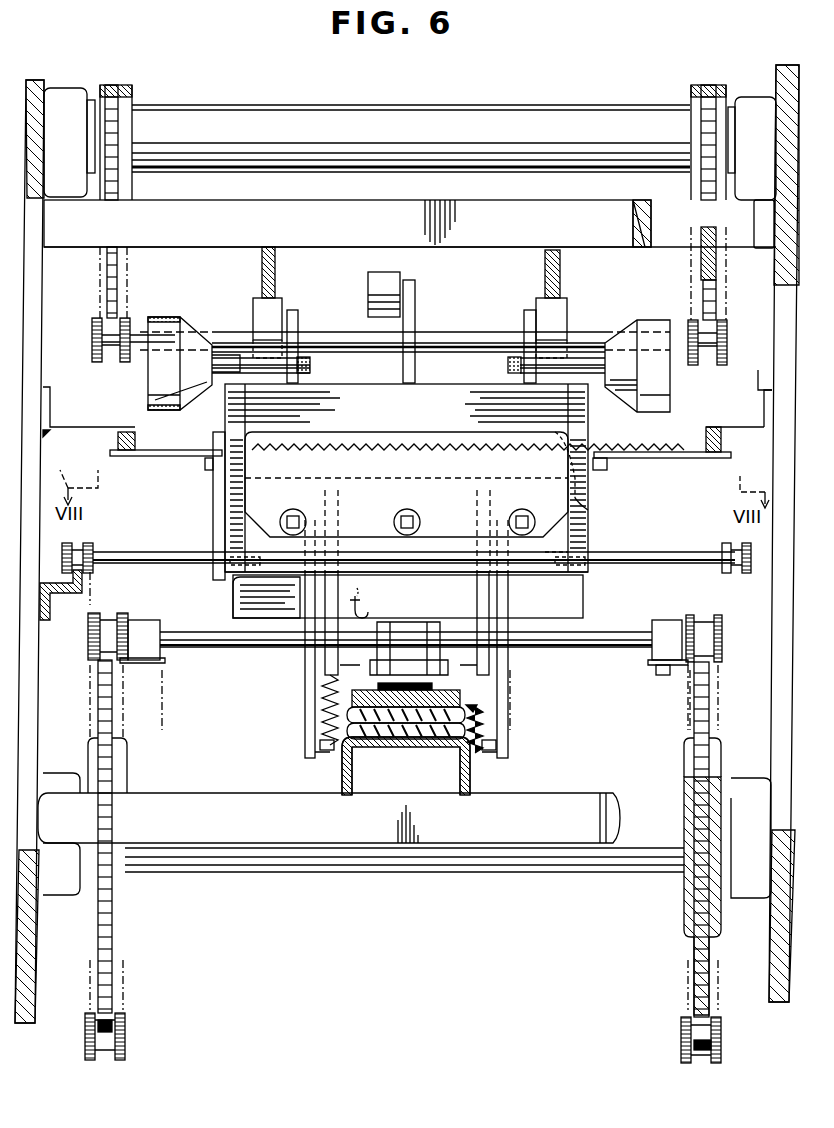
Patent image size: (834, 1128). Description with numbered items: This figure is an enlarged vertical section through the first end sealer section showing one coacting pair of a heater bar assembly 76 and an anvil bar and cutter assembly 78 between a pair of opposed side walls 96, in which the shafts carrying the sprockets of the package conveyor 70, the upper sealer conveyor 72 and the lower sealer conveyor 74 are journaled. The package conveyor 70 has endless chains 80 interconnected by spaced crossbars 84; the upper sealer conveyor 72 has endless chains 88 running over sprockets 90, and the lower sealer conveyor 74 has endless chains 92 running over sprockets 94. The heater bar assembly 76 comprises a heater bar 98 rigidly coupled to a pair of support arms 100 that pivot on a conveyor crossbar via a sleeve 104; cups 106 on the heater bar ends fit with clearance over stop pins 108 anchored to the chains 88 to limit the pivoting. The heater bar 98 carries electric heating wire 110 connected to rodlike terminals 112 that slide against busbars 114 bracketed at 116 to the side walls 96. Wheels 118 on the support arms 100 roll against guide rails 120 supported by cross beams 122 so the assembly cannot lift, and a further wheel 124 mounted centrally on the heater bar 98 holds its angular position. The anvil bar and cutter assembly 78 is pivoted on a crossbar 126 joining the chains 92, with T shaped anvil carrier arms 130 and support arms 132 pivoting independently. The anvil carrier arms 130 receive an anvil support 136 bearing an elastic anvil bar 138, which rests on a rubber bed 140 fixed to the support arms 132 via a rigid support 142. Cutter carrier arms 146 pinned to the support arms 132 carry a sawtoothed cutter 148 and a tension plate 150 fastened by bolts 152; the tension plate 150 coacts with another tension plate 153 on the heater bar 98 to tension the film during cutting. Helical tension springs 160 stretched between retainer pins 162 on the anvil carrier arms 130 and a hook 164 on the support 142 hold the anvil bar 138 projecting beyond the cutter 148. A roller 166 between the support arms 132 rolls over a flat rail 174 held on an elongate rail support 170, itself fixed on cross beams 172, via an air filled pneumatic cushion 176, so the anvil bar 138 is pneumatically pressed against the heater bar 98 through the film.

The package conveyor 70 is at (97, 582).
The upper sealer conveyor 72 is at (393, 343).
The lower sealer conveyor 74 is at (387, 818).
The heater bar assembly 76 is at (423, 469).
The anvil bar and cutter assembly 78 is at (229, 597).
The endless chain 80 is at (90, 547).
The crossbar 84 is at (660, 552).
The endless chain 88 is at (128, 325).
The sprocket 90 is at (112, 123).
The endless chain 92 is at (120, 615).
The sprocket 94 is at (106, 920).
The side wall 96 is at (40, 85).
The heater bar 98 is at (607, 473).
The support arm 100 is at (298, 323).
The sleeve 104 is at (432, 330).
The cup 106 is at (188, 328).
The stop pin 108 is at (145, 345).
The electric heating wire 110 is at (575, 475).
The rodlike terminal 112 is at (158, 452).
The busbar 114 is at (118, 443).
The bracket 116 is at (732, 432).
The wheel 118 is at (278, 310).
The guide rail 120 is at (262, 265).
The cross beam 122 is at (462, 200).
The wheel 124 is at (372, 278).
The crossbar 126 is at (585, 648).
The anvil carrier arm 130 is at (305, 730).
The support arm 132 is at (350, 645).
The anvil support 136 is at (590, 521).
The anvil bar 138 is at (588, 488).
The bed 140 is at (588, 580).
The rigid support 142 is at (583, 615).
The cutter carrier arm 146 is at (330, 540).
The sawtoothed cutter 148 is at (398, 447).
The tension plate 150 is at (428, 432).
The bolt 152 is at (412, 510).
The tension plate 153 is at (225, 480).
The helical tension spring 160 is at (322, 703).
The retainer pin 162 is at (322, 750).
The hook 164 is at (368, 608).
The roller 166 is at (418, 628).
The rail support 170 is at (342, 778).
The cross beam 172 is at (230, 848).
The flat rail 174 is at (430, 708).
The pneumatic cushion 176 is at (385, 740).